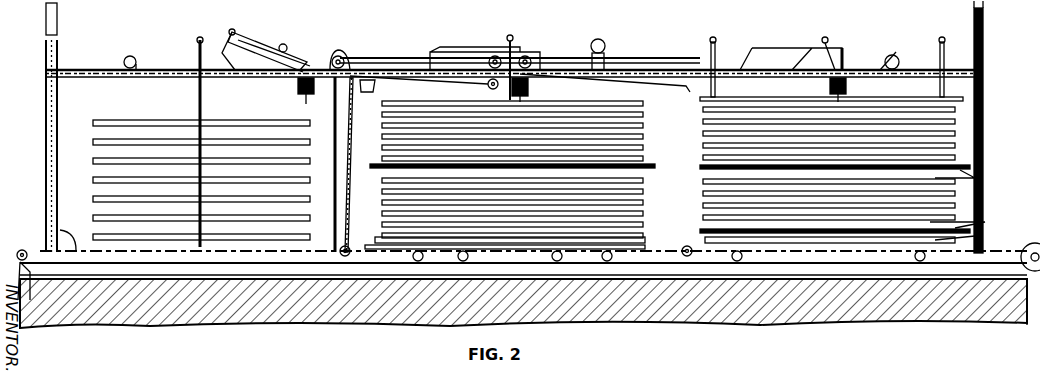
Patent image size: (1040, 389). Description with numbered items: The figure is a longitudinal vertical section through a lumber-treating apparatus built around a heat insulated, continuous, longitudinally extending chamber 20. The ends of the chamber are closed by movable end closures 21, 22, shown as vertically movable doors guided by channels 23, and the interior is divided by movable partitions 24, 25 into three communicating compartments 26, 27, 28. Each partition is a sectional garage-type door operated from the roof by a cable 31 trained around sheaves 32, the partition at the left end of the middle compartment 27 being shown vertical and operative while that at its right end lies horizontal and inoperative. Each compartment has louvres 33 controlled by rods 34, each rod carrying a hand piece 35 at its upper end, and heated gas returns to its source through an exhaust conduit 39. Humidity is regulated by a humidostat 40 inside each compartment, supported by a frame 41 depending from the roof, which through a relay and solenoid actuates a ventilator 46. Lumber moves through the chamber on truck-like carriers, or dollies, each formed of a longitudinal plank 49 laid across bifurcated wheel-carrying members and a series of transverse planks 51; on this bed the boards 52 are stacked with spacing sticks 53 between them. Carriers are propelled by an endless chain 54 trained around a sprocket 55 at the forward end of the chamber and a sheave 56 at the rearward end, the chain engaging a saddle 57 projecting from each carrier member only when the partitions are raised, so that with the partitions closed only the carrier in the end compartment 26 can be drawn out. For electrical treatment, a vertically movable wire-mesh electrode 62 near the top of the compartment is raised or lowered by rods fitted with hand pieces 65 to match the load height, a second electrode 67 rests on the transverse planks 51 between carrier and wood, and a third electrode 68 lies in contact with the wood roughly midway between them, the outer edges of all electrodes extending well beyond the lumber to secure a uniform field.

The heat insulated chamber 20 is at (86, 68).
The end closure 21 is at (983, 126).
The end closure 22 is at (46, 150).
The channels 23 is at (984, 32).
The movable partition 24 is at (668, 90).
The movable partition 25 is at (360, 165).
The compartment 26 is at (740, 92).
The compartment 27 is at (398, 90).
The compartment 28 is at (116, 93).
The cable 31 is at (380, 56).
The sheaves 32 is at (337, 56).
The louvres 33 is at (150, 120).
The rods 34 is at (198, 58).
The hand piece 35 is at (197, 38).
The exhaust conduit 39 is at (134, 56).
The humidostat 40 is at (296, 88).
The frame 41 is at (306, 97).
The ventilator 46 is at (252, 44).
The plank 49 is at (498, 248).
The planks 51 is at (496, 252).
The boards 52 is at (382, 180).
The sticks 53 is at (382, 212).
The endless chain 54 is at (70, 232).
The sprocket 55 is at (1022, 250).
The sheave 56 is at (22, 250).
The saddle 57 is at (570, 252).
The vertically movable electrode 62 is at (916, 97).
The hand piece 65 is at (714, 36).
The electrode 67 is at (970, 226).
The third electrode 68 is at (975, 178).